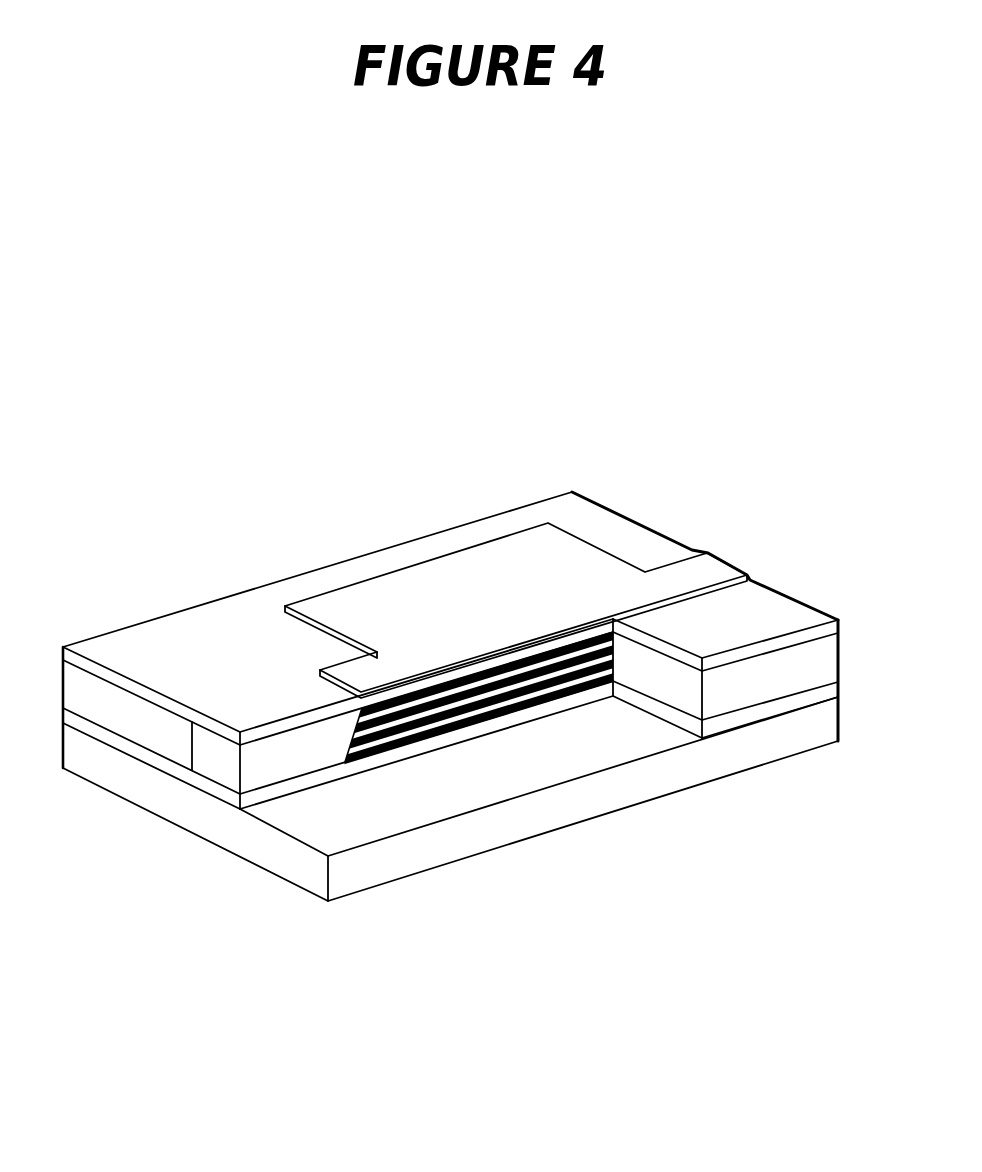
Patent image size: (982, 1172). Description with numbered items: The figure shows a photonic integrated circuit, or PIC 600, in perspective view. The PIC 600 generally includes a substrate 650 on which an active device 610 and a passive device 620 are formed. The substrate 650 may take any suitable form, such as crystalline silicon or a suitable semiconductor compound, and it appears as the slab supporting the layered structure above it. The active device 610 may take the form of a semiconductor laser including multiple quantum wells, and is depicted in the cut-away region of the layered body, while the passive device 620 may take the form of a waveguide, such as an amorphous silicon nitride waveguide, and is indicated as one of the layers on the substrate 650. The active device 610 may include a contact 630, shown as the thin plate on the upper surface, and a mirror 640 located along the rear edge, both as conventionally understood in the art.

The PIC 600 is at (594, 372).
The active device 610 is at (441, 723).
The passive device 620 is at (252, 773).
The contact 630 is at (508, 558).
The mirror 640 is at (697, 535).
The substrate 650 is at (617, 797).